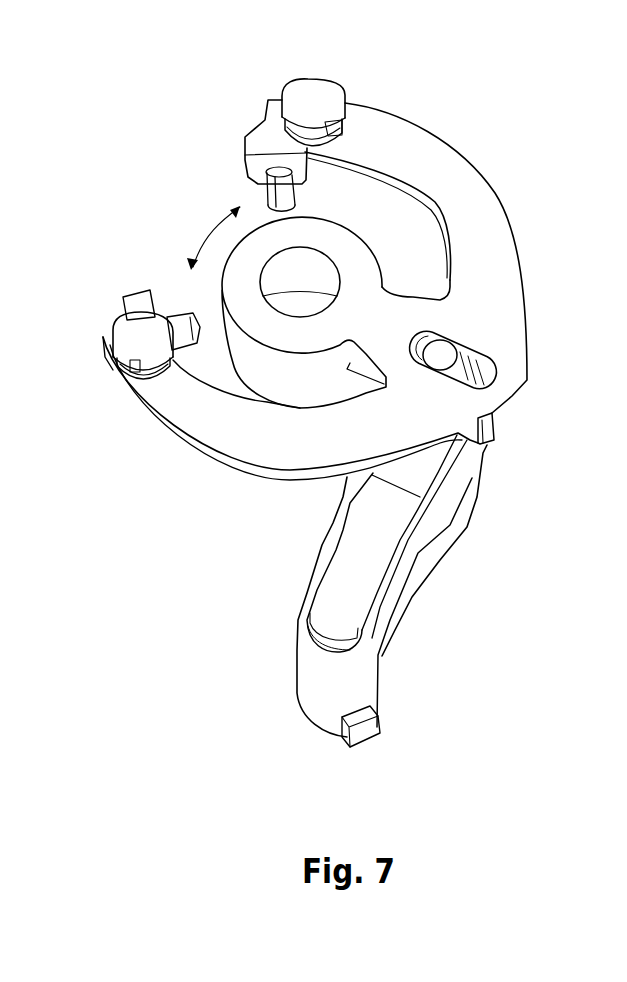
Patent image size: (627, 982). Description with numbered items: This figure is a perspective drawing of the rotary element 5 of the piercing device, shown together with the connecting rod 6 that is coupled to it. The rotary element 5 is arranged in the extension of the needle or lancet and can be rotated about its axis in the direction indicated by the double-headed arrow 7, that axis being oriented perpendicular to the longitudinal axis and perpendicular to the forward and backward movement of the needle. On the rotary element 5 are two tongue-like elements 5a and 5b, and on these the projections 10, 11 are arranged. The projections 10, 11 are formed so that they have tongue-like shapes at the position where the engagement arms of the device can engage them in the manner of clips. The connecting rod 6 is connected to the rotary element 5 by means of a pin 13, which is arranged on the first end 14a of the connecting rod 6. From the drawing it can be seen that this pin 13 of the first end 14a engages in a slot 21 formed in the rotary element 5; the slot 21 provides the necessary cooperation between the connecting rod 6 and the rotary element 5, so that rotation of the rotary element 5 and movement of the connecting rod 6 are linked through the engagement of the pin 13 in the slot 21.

The rotary element 5 is at (490, 257).
The tongue-like element 5a is at (378, 135).
The tongue-like element 5b is at (207, 427).
The connecting rod 6 is at (373, 553).
The double-headed arrow 7 is at (203, 238).
The projection 10 is at (309, 96).
The projection 11 is at (137, 333).
The pin 13 is at (457, 350).
The first end 14a is at (458, 461).
The slot 21 is at (475, 366).